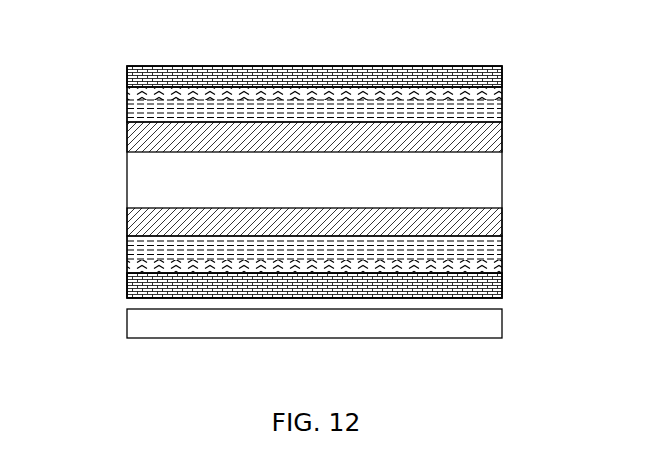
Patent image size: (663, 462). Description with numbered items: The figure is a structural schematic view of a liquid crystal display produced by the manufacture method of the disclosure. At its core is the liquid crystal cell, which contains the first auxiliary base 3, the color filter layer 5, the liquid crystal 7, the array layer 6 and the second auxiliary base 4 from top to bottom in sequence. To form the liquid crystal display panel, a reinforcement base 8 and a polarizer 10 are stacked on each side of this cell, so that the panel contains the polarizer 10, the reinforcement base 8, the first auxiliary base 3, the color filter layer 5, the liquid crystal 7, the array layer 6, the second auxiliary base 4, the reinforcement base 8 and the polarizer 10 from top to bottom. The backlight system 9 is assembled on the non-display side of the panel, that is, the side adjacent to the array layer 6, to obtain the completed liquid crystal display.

The first auxiliary base 3 is at (509, 105).
The second auxiliary base 4 is at (508, 256).
The color filter layer 5 is at (511, 136).
The array layer 6 is at (504, 223).
The liquid crystal 7 is at (120, 143).
The reinforcement base 8 is at (503, 81).
The backlight system 9 is at (258, 334).
The polarizer 10 is at (357, 64).